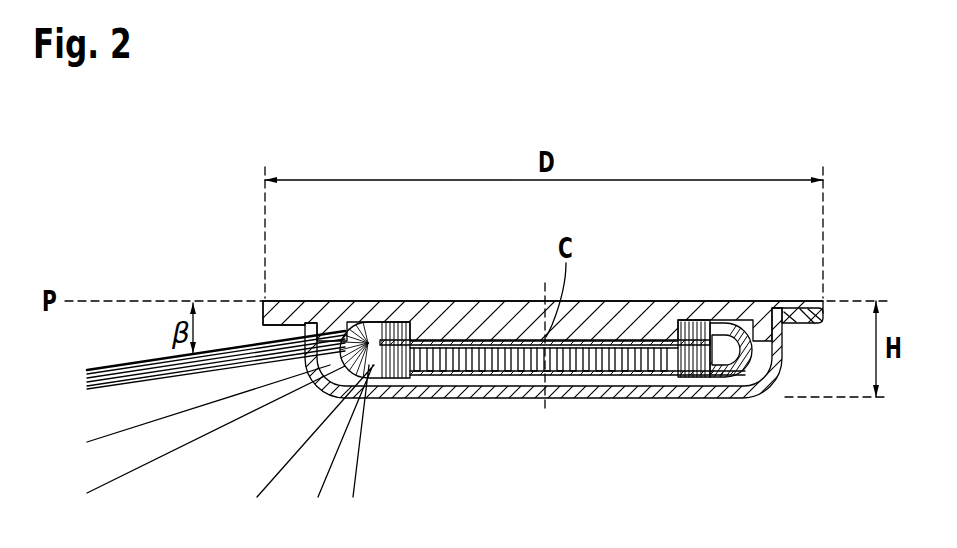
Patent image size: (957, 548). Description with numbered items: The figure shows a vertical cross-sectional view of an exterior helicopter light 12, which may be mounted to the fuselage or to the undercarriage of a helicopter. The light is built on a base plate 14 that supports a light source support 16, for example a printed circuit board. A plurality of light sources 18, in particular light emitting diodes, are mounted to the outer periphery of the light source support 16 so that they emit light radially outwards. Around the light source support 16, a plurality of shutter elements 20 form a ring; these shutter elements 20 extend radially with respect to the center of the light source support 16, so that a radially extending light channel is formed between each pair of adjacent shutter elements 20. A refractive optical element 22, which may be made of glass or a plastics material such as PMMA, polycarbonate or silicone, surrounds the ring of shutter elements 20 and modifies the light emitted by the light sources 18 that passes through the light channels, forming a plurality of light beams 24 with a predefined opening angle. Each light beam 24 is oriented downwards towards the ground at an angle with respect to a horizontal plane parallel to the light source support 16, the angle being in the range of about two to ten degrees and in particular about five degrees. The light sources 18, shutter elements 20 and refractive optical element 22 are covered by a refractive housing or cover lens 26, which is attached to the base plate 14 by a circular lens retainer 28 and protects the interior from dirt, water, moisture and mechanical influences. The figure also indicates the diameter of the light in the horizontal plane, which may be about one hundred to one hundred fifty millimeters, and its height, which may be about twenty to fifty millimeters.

The exterior helicopter light 12 is at (525, 422).
The base plate 14 is at (457, 300).
The light source support 16 is at (673, 372).
The light sources 18 is at (368, 380).
The shutter elements 20 is at (633, 365).
The refractive optical element 22 is at (782, 350).
The light beams 24 is at (132, 380).
The cover lens 26 is at (437, 392).
The lens retainer 28 is at (280, 303).